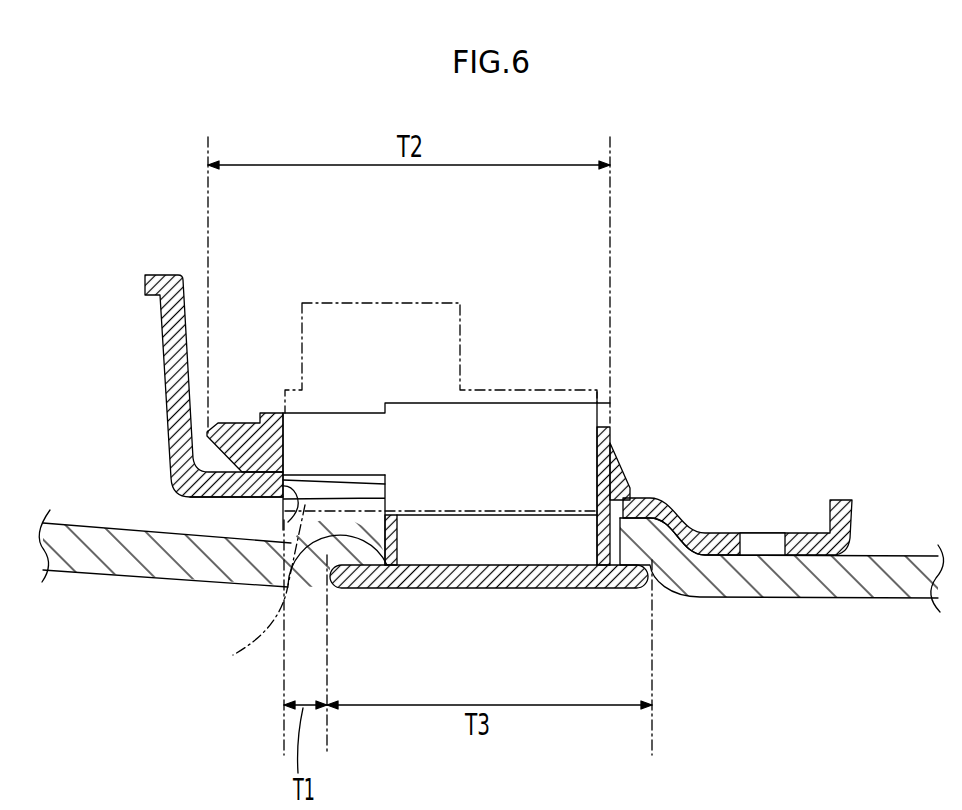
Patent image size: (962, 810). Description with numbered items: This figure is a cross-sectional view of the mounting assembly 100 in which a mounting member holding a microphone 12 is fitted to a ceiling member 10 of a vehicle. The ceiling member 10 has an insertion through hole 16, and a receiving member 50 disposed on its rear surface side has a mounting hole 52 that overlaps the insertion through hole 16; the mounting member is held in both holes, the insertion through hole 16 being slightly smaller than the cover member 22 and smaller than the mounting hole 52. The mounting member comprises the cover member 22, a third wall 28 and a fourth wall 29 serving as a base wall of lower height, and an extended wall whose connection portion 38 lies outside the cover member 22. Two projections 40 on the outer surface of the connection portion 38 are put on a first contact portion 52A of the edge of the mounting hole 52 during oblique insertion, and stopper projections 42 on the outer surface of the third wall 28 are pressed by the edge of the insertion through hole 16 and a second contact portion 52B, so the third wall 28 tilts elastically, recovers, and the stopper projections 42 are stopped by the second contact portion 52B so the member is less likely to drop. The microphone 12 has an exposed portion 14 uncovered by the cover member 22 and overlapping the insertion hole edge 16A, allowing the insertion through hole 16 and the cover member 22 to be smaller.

The mounting assembly 100 is at (752, 297).
The ceiling member 10 is at (845, 587).
The microphone 12 is at (400, 330).
The exposed portion 14 is at (254, 590).
The insertion through hole 16 is at (393, 562).
The insertion hole edge 16A is at (347, 545).
The cover member 22 is at (583, 590).
The third wall 28 is at (610, 420).
The fourth wall 29 is at (390, 523).
The connection portion 38 is at (270, 428).
The projection 40 is at (238, 445).
The stopper projection 42 is at (612, 480).
The receiving member 50 is at (167, 275).
The mounting hole 52 is at (288, 522).
The first contact portion 52A is at (250, 497).
The second contact portion 52B is at (642, 510).